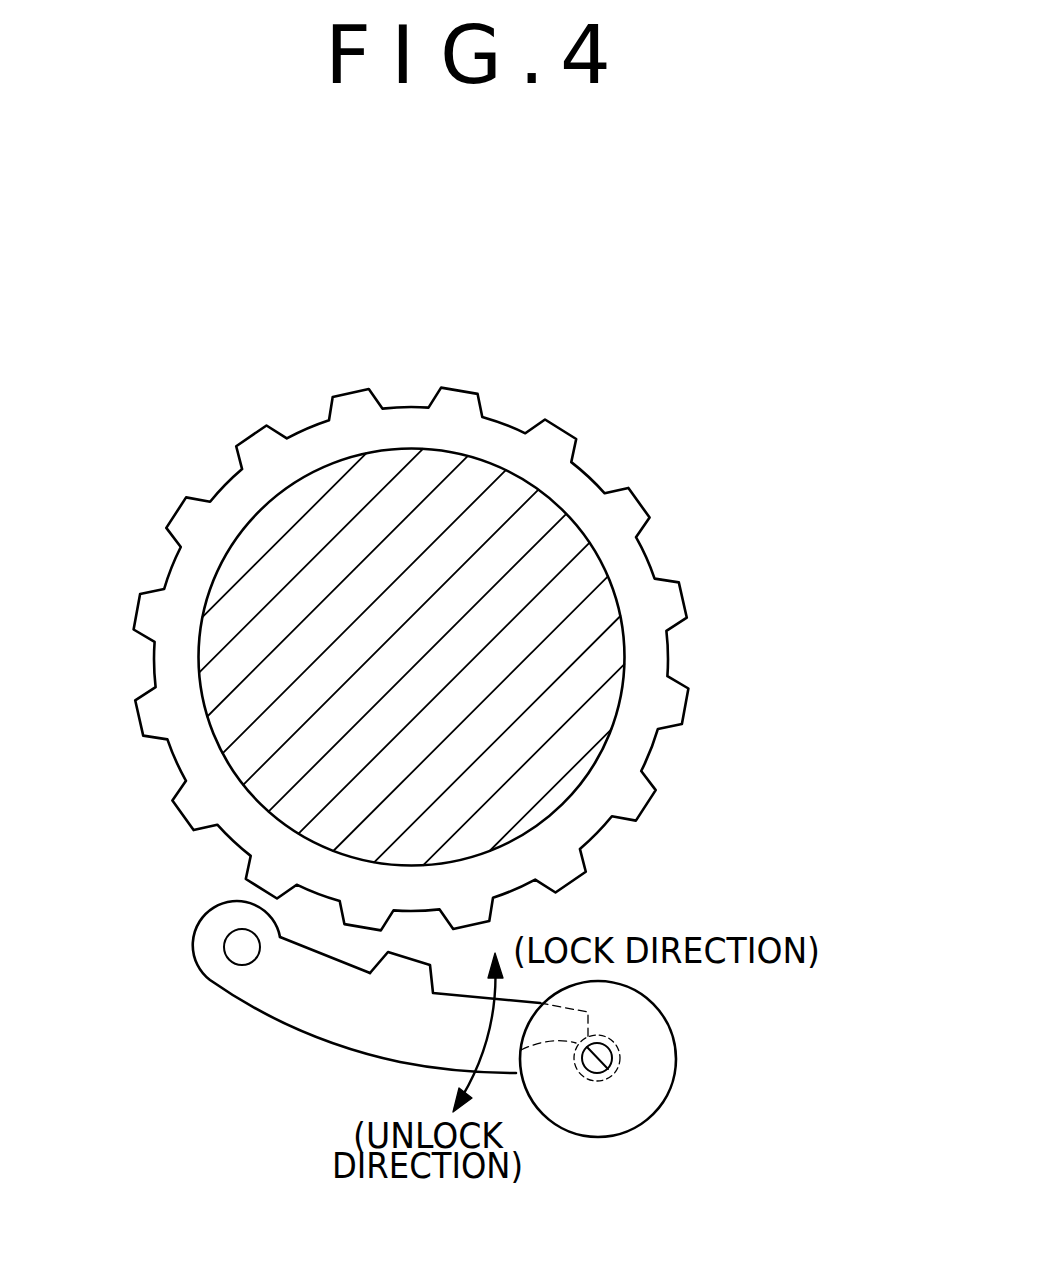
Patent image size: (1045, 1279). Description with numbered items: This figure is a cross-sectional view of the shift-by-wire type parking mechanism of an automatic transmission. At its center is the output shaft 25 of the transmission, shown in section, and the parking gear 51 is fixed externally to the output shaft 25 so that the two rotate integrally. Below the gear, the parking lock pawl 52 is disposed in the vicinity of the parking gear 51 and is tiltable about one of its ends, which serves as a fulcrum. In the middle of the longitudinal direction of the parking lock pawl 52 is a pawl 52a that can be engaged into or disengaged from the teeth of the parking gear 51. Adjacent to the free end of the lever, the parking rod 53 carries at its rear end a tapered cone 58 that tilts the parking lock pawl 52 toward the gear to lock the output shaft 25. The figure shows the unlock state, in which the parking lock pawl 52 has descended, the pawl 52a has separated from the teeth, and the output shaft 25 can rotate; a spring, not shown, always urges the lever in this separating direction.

The output shaft 25 is at (537, 517).
The parking gear 51 is at (703, 597).
The parking lock pawl 52 is at (473, 993).
The pawl 52a is at (402, 975).
The parking rod 53 is at (613, 1052).
The tapered cone 58 is at (607, 1123).